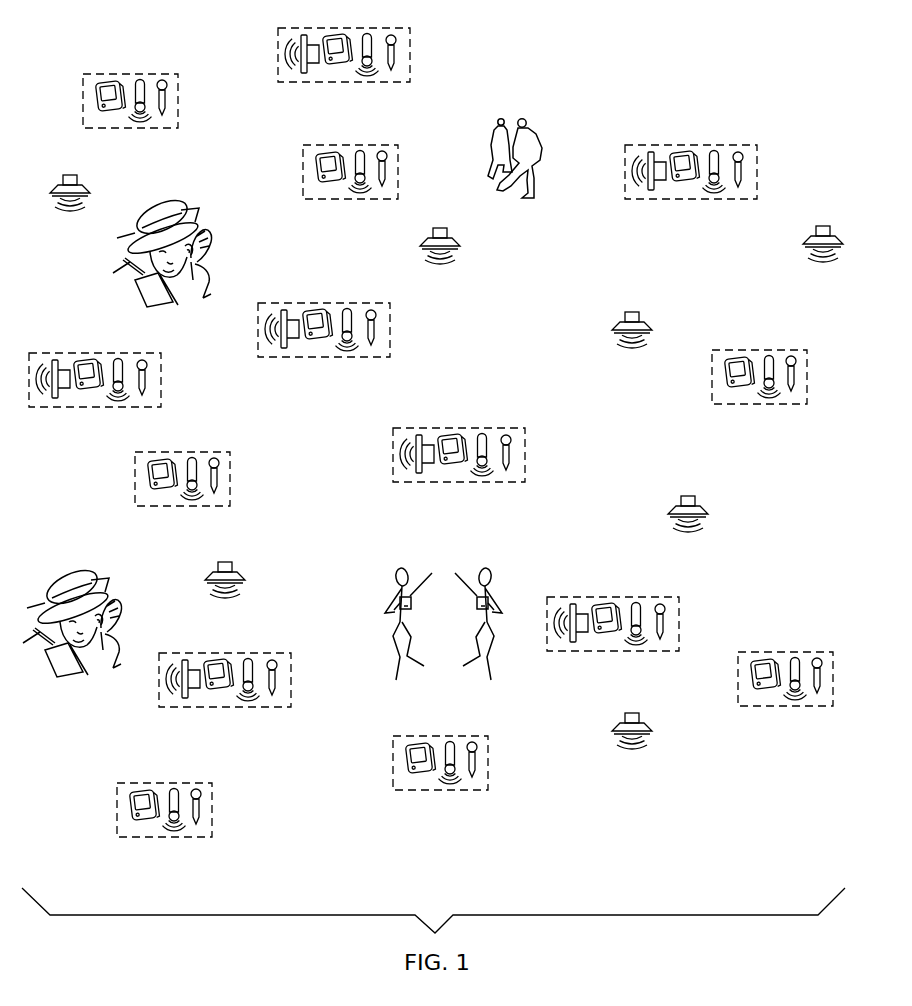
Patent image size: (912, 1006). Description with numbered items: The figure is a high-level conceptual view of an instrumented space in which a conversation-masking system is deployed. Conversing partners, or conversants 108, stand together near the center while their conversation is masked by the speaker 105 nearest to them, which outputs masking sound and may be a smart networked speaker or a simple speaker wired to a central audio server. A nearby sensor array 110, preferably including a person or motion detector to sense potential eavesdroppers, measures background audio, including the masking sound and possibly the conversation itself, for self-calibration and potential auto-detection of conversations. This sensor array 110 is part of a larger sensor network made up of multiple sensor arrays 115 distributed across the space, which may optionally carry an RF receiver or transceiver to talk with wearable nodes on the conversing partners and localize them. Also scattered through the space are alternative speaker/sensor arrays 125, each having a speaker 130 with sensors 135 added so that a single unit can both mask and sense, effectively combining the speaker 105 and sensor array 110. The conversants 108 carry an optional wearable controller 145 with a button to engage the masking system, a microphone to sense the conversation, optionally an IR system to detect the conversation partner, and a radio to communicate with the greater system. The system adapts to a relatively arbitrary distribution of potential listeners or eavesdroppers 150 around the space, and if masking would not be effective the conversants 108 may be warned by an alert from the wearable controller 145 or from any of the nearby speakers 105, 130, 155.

The speaker 105 is at (648, 725).
The conversants 108 is at (485, 582).
The sensor array 110 is at (757, 652).
The sensor arrays 115 is at (765, 350).
The speaker/sensor arrays 125 is at (462, 428).
The speaker 130 is at (430, 472).
The sensors 135 is at (513, 462).
The wearable controller 145 is at (478, 607).
The potential listeners or eavesdroppers 150 is at (500, 118).
The speakers 155 is at (458, 238).